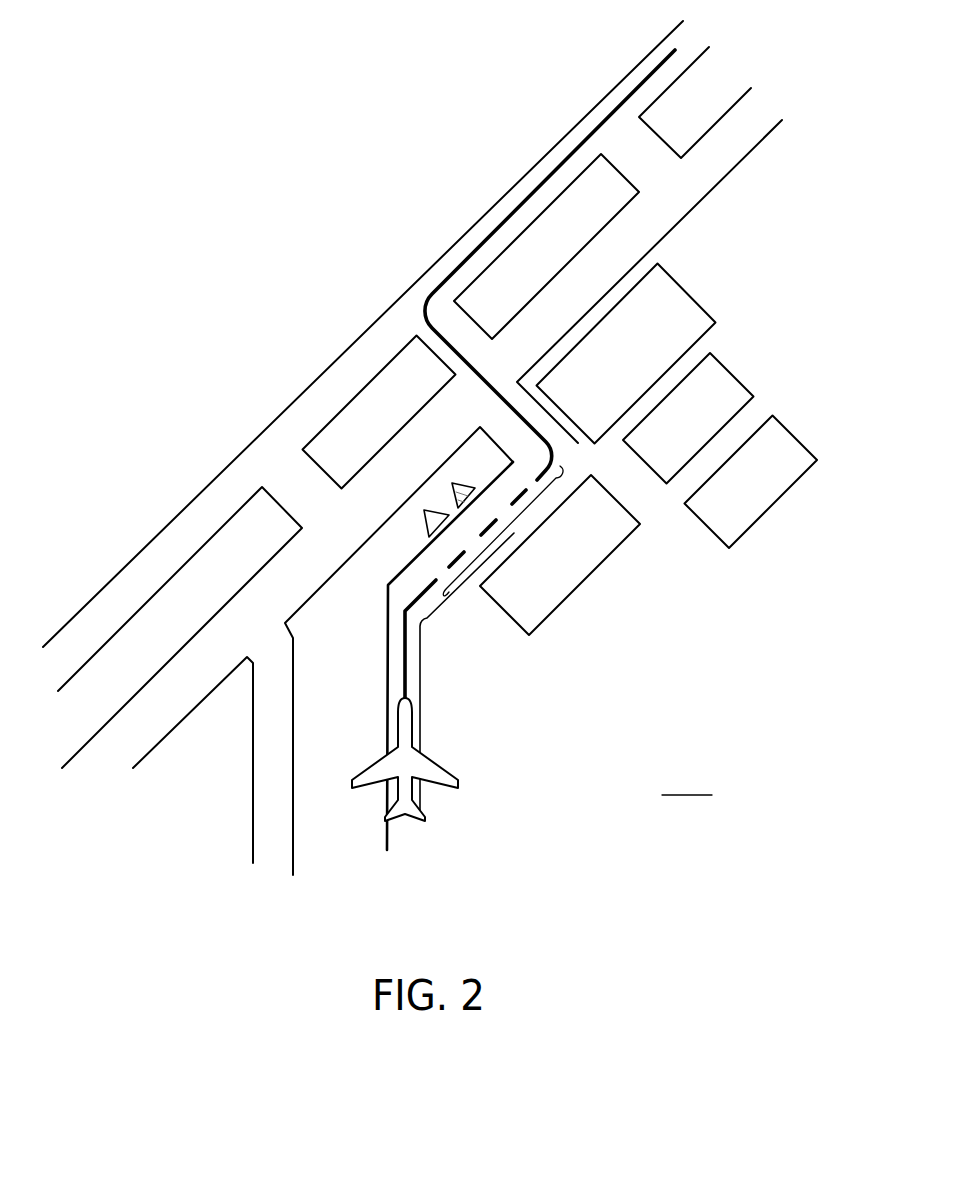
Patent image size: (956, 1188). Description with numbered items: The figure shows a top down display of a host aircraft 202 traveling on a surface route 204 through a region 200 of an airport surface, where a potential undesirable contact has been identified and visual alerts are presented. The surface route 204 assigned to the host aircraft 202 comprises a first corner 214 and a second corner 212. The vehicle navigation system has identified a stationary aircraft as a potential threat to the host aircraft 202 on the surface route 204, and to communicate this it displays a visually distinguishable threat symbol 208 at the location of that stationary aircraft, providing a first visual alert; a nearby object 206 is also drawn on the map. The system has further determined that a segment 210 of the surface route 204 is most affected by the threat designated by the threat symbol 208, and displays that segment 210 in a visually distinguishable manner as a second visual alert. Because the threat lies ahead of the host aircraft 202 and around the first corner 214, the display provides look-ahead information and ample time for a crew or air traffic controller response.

The region 200 is at (430, 448).
The host aircraft 202 is at (458, 783).
The surface route 204 is at (615, 110).
The first ground object 206 is at (432, 527).
The threat symbol 208 is at (458, 485).
The segment 210 is at (515, 537).
The second corner 212 is at (567, 462).
The first corner 214 is at (427, 617).